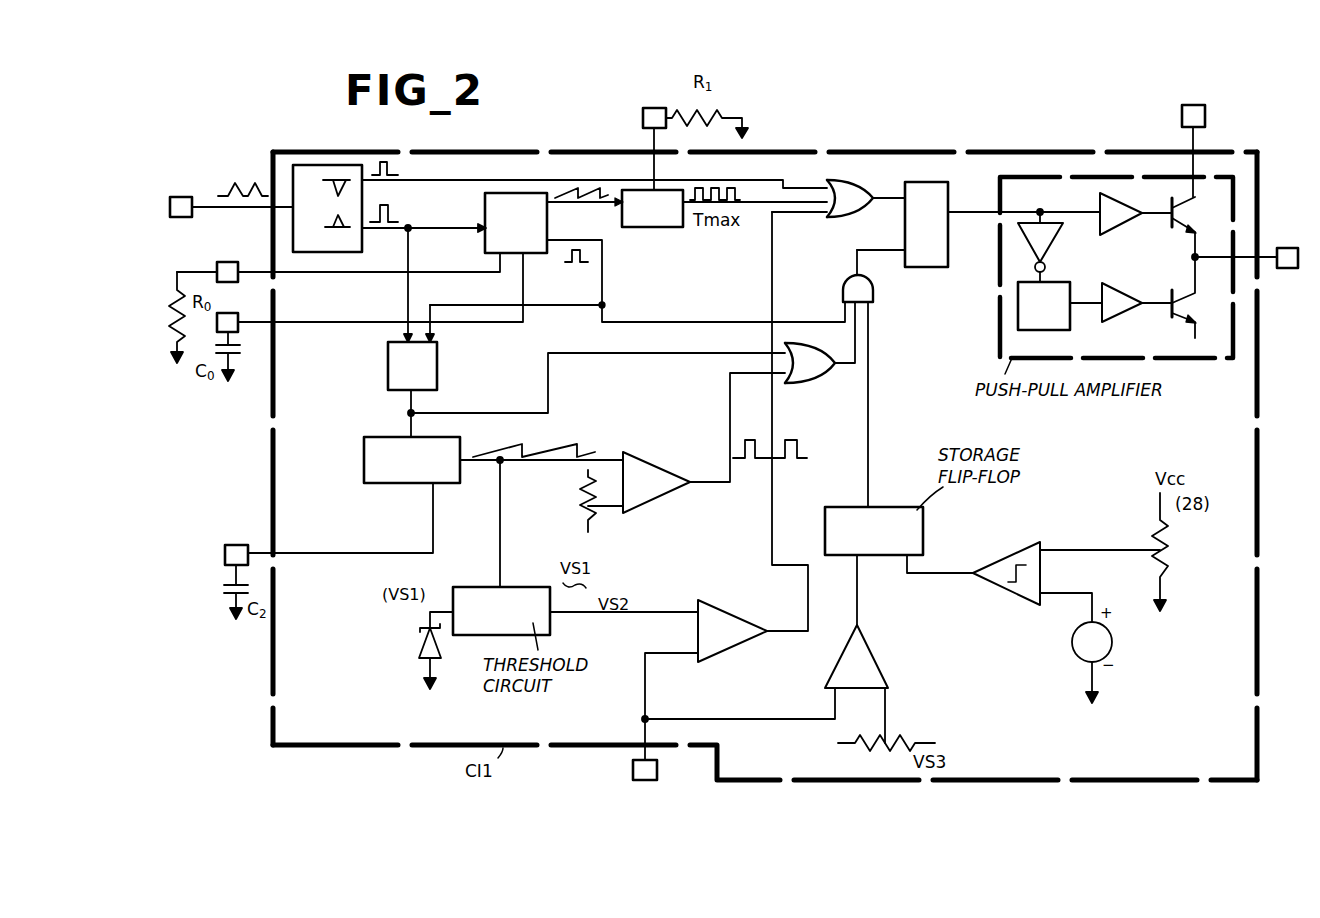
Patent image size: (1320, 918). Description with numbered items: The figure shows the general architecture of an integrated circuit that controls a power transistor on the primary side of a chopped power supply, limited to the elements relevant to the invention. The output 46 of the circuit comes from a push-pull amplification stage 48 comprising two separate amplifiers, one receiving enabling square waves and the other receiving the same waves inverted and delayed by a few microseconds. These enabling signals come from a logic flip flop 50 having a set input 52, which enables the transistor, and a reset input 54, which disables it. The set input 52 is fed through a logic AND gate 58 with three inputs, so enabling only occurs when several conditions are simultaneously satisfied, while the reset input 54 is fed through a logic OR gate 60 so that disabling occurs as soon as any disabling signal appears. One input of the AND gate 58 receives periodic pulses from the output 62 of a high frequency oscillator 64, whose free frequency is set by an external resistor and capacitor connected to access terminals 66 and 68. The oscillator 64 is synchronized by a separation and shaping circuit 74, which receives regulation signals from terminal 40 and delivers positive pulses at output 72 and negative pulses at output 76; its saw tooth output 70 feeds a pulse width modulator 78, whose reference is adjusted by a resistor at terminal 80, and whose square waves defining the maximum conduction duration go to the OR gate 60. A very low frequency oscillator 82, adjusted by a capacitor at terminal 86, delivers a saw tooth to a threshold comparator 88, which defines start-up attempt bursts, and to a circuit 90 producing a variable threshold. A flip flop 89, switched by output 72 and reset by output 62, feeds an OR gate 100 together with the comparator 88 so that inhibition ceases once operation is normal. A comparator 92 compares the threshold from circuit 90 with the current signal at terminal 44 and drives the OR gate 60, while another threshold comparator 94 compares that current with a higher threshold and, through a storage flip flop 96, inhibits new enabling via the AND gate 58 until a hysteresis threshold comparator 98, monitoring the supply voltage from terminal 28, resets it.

The power supply terminal 28 is at (1205, 115).
The regulation signal terminal 40 is at (182, 190).
The current measuring terminal 44 is at (633, 772).
The output 46 is at (1288, 247).
The push-pull amplification stage 48 is at (1000, 303).
The logic flip flop 50 is at (950, 190).
The set input 52 is at (892, 249).
The reset input 54 is at (886, 196).
The logic AND gate 58 is at (876, 286).
The logic OR gate 60 is at (840, 216).
The pulse output of high frequency oscillator 62 is at (548, 245).
The high frequency oscillator 64 is at (480, 206).
The access terminal 66 is at (223, 246).
The access terminal 68 is at (230, 310).
The saw tooth output 70 is at (562, 206).
The positive pulse output 72 is at (368, 230).
The separation and shaping circuit 74 is at (320, 165).
The negative pulse output 76 is at (403, 180).
The pulse width modulator 78 is at (650, 228).
The access terminal 80 is at (657, 103).
The very low frequency oscillator 82 is at (395, 437).
The access terminal 86 is at (240, 544).
The threshold comparator 88 is at (648, 452).
The flip flop 89 is at (448, 348).
The variable threshold circuit 90 is at (485, 587).
The comparator 92 is at (725, 612).
The threshold comparator 94 is at (878, 640).
The storage flip flop 96 is at (893, 507).
The hysteresis threshold comparator 98 is at (1004, 566).
The OR gate 100 is at (822, 382).